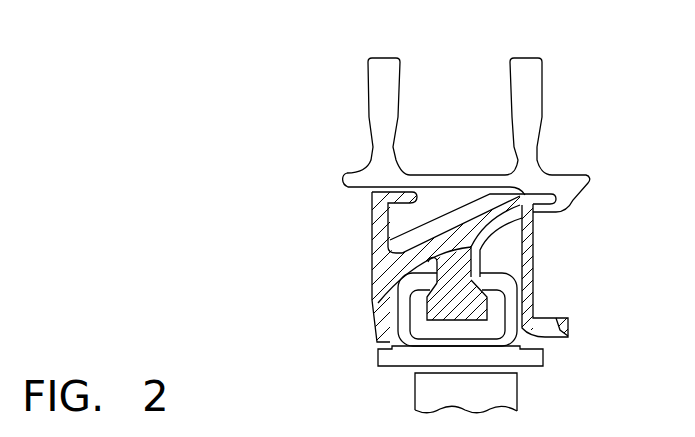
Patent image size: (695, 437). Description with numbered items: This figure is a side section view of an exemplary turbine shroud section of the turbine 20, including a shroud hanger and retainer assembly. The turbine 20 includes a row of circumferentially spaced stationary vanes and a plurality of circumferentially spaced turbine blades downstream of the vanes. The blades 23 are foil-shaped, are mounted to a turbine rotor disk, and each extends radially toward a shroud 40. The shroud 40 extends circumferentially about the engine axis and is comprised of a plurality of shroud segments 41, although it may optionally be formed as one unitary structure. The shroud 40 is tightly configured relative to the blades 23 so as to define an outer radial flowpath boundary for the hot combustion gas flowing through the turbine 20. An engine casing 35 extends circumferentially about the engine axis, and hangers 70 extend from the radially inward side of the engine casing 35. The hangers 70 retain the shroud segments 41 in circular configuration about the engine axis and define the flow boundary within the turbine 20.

The turbine 20 is at (560, 88).
The engine casing 35 is at (353, 100).
The hanger 70 is at (348, 258).
The shroud segment 41 is at (495, 279).
The shroud 40 is at (562, 365).
The blade 23 is at (500, 400).